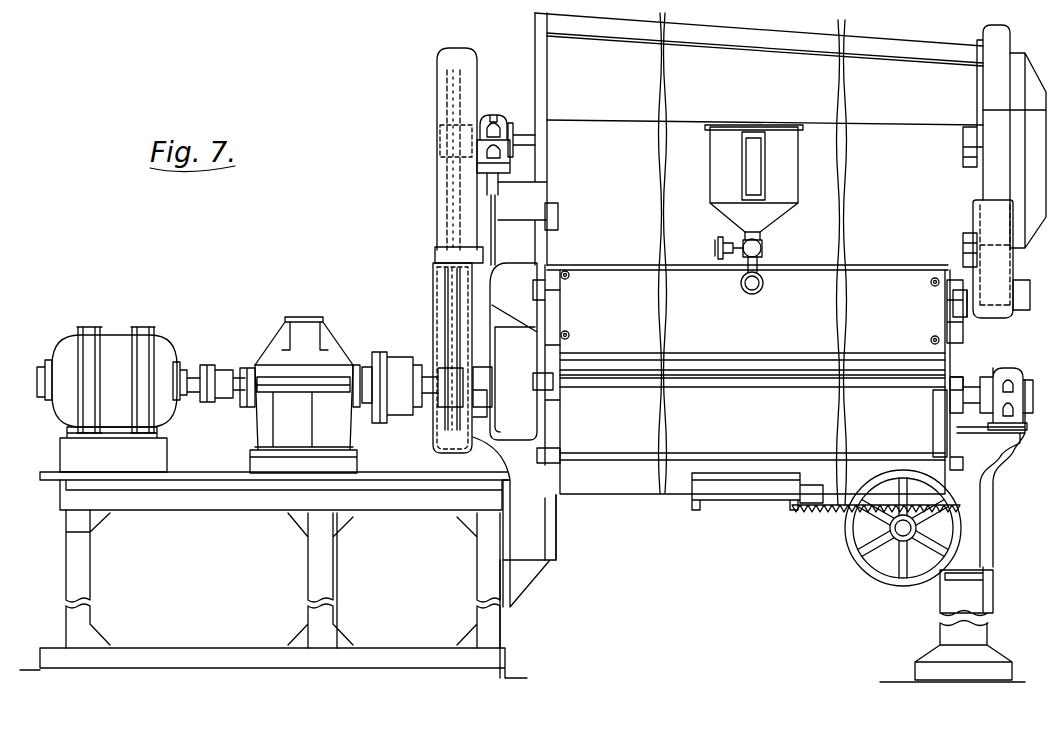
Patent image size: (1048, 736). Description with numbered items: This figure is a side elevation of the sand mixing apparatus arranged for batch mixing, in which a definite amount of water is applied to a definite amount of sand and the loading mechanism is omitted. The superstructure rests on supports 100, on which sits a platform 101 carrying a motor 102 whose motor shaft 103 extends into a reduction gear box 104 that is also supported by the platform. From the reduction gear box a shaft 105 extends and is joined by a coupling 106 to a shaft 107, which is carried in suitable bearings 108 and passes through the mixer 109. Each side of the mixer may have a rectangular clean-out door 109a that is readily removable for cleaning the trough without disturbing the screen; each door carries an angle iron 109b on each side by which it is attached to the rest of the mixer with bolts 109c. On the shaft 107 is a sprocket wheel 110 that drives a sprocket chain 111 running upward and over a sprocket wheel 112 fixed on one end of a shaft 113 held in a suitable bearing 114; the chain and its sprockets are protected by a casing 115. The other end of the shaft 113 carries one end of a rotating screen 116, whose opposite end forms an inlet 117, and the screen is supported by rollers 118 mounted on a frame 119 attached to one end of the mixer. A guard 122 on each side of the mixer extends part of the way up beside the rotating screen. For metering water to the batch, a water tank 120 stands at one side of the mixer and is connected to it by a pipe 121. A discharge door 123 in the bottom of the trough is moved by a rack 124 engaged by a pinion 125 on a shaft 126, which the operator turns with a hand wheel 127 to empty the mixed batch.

The supports 100 is at (480, 573).
The platform 101 is at (210, 500).
The motor 102 is at (117, 340).
The motor shaft 103 is at (197, 372).
The reduction gear box 104 is at (308, 330).
The shaft 105 is at (365, 377).
The coupling 106 is at (402, 365).
The shaft 107 is at (432, 392).
The bearings 108 is at (490, 402).
The mixer 109 is at (628, 482).
The clean-out door 109a is at (752, 332).
The angle iron 109b is at (865, 350).
The bolts 109c is at (570, 278).
The sprocket wheel 110 is at (458, 373).
The sprocket chain 111 is at (445, 305).
The sprocket wheel 112 is at (440, 140).
The shaft 113 is at (522, 137).
The bearing 114 is at (495, 115).
The casing 115 is at (437, 222).
The rotating screen 116 is at (917, 28).
The inlet 117 is at (980, 110).
The rollers 118 is at (984, 318).
The frame 119 is at (1013, 313).
The water tank 120 is at (780, 163).
The pipe 121 is at (758, 268).
The guard 122 is at (630, 107).
The discharge door 123 is at (722, 498).
The rack 124 is at (812, 513).
The pinion 125 is at (895, 547).
The shaft 126 is at (890, 558).
The hand wheel 127 is at (858, 543).